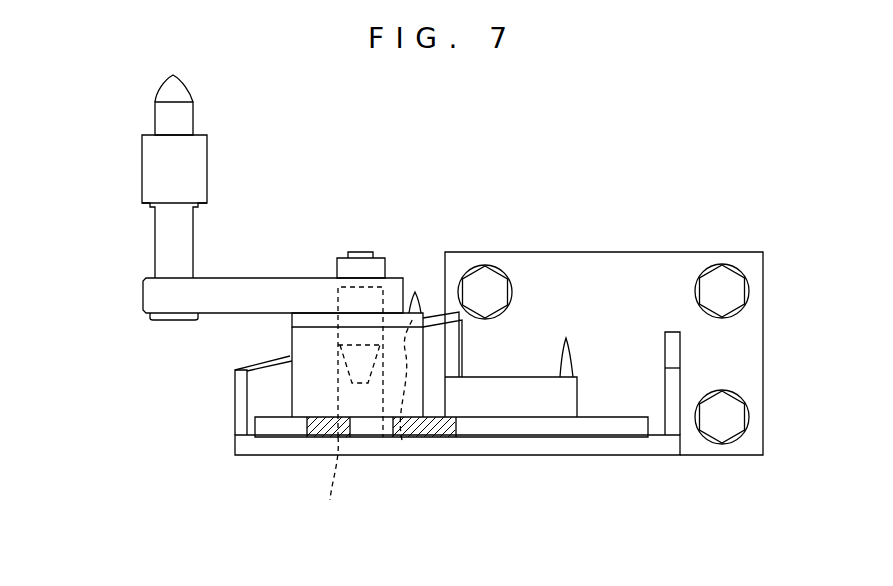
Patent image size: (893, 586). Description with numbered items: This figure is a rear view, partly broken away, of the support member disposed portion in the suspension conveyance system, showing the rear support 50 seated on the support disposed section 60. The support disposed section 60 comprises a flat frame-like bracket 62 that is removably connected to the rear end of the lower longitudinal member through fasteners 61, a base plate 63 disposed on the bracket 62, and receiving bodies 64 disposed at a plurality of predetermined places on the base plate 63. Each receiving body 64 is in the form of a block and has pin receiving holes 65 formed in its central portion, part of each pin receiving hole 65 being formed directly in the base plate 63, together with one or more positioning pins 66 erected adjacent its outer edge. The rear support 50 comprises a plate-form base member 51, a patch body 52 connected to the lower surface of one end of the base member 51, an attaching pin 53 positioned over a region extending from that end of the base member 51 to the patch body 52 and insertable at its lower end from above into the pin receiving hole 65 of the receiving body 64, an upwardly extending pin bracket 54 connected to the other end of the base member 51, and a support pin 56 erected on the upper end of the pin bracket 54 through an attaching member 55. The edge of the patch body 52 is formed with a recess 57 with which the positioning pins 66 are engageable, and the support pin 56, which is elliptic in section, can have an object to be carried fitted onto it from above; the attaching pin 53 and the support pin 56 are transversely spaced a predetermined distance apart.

The rear support 50 is at (138, 322).
The base member 51 is at (243, 292).
The patch body 52 is at (312, 318).
The attaching pin 53 is at (338, 345).
The pin bracket 54 is at (155, 255).
The attaching member 55 is at (155, 180).
The support pin 56 is at (175, 115).
The recess 57 is at (402, 440).
The support disposed section 60 is at (613, 463).
The fasteners 61 is at (731, 300).
The bracket 62 is at (638, 445).
The base plate 63 is at (577, 433).
The receiving bodies 64 is at (300, 393).
The pin receiving holes 65 is at (368, 428).
The positioning pins 66 is at (423, 308).